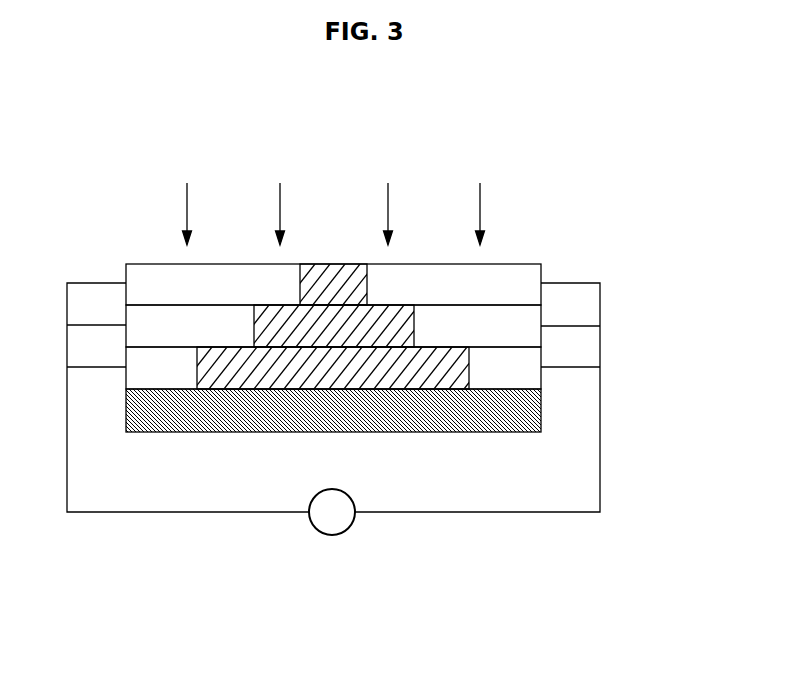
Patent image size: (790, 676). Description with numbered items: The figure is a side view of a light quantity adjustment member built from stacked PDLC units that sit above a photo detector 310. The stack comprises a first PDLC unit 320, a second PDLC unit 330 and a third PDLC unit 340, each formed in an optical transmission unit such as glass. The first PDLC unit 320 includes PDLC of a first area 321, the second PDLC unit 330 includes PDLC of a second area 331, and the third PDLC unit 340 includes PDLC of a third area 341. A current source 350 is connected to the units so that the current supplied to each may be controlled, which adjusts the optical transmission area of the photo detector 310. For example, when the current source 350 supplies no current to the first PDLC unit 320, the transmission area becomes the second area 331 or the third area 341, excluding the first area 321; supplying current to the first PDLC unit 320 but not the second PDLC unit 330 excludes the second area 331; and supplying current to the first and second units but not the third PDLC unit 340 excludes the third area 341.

The photo detector 310 is at (541, 413).
The first PDLC unit 320 is at (541, 356).
The first area 321 is at (330, 368).
The second PDLC unit 330 is at (541, 314).
The second area 331 is at (327, 326).
The third PDLC unit 340 is at (541, 274).
The third area 341 is at (329, 284).
The current source 350 is at (331, 535).